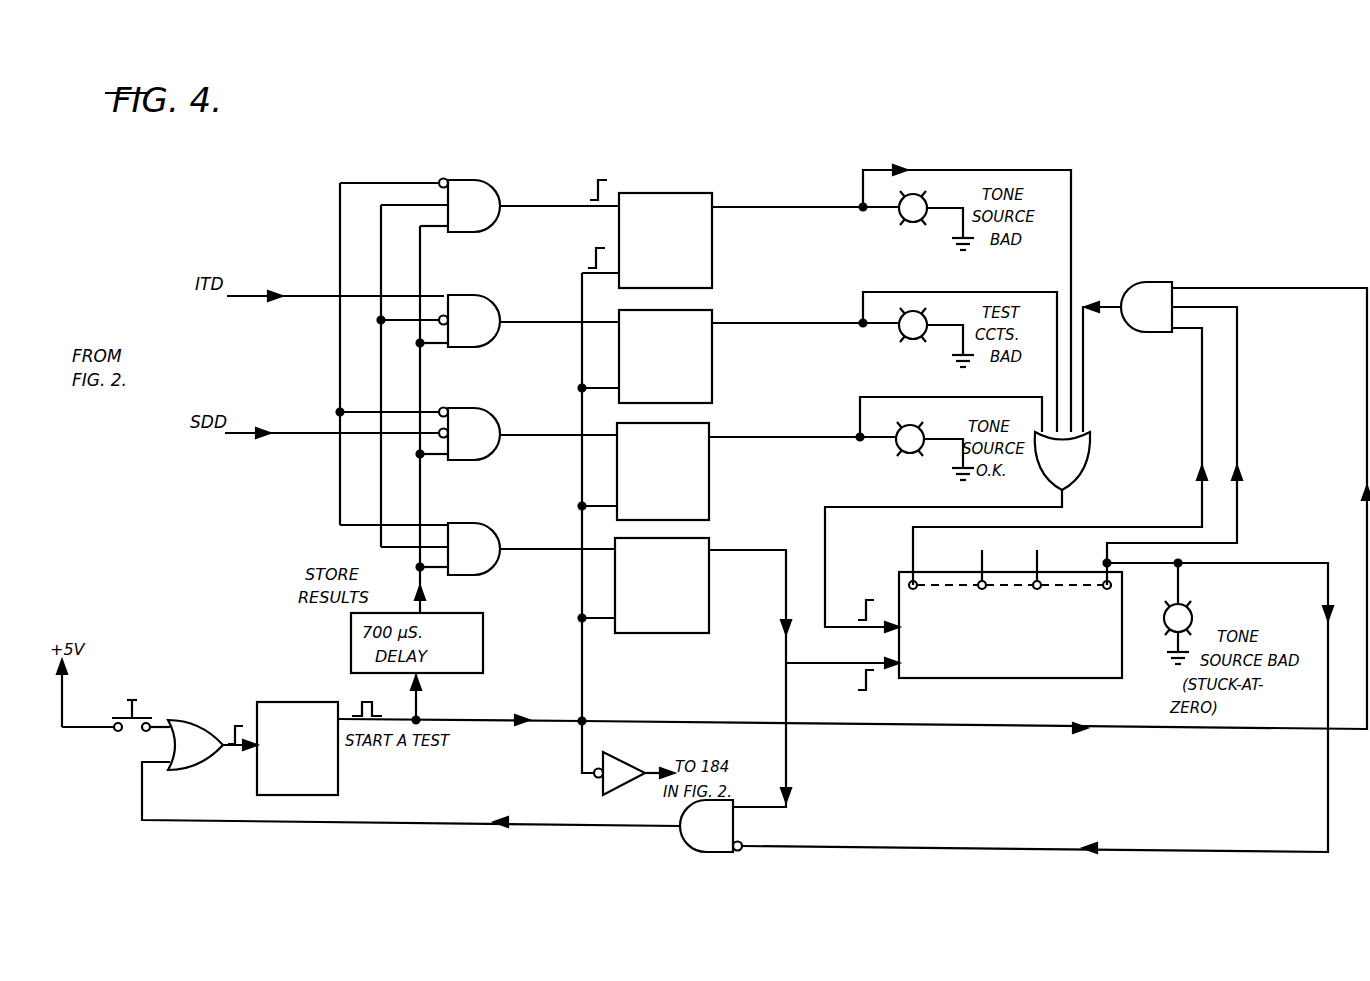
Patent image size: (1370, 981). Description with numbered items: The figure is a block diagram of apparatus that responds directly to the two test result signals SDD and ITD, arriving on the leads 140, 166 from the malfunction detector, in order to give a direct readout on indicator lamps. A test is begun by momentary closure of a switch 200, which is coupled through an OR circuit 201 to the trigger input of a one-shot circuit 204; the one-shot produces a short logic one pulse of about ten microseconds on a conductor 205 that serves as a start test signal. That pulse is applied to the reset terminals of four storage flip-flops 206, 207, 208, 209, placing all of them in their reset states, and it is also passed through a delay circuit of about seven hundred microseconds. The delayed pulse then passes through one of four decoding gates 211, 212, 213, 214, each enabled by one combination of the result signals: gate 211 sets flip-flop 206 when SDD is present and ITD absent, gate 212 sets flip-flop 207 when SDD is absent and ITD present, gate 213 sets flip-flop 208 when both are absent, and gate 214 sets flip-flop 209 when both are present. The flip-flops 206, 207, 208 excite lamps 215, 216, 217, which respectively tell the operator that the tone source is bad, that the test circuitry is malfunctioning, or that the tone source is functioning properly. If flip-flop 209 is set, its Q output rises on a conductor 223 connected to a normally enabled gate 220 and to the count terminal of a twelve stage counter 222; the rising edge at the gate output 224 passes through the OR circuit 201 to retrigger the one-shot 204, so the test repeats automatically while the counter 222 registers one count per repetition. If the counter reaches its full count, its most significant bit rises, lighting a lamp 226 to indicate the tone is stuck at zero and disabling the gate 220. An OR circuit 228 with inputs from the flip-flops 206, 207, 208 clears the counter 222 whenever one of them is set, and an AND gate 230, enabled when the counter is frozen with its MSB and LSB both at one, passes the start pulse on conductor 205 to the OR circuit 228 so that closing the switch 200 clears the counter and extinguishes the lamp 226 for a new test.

The lead 140 is at (296, 432).
The lead 166 is at (262, 300).
The switch 200 is at (150, 682).
The OR circuit 201 is at (192, 720).
The one-shot circuit 204 is at (257, 788).
The conductor 205 is at (1242, 288).
The storage flip-flop 206 is at (712, 275).
The storage flip-flop 207 is at (712, 370).
The storage flip-flop 208 is at (709, 482).
The storage flip-flop 209 is at (709, 596).
The decoding gate 211 is at (484, 180).
The decoding gate 212 is at (486, 296).
The decoding gate 213 is at (486, 409).
The decoding gate 214 is at (484, 524).
The lamp 215 is at (908, 226).
The lamp 216 is at (903, 342).
The lamp 217 is at (903, 456).
The gate 220 is at (692, 850).
The twelve binary stage counter 222 is at (998, 680).
The conductor 223 is at (786, 658).
The output of gate 224 is at (365, 821).
The lamp 226 is at (1192, 612).
The OR circuit 228 is at (1088, 460).
The AND gate 230 is at (1168, 270).